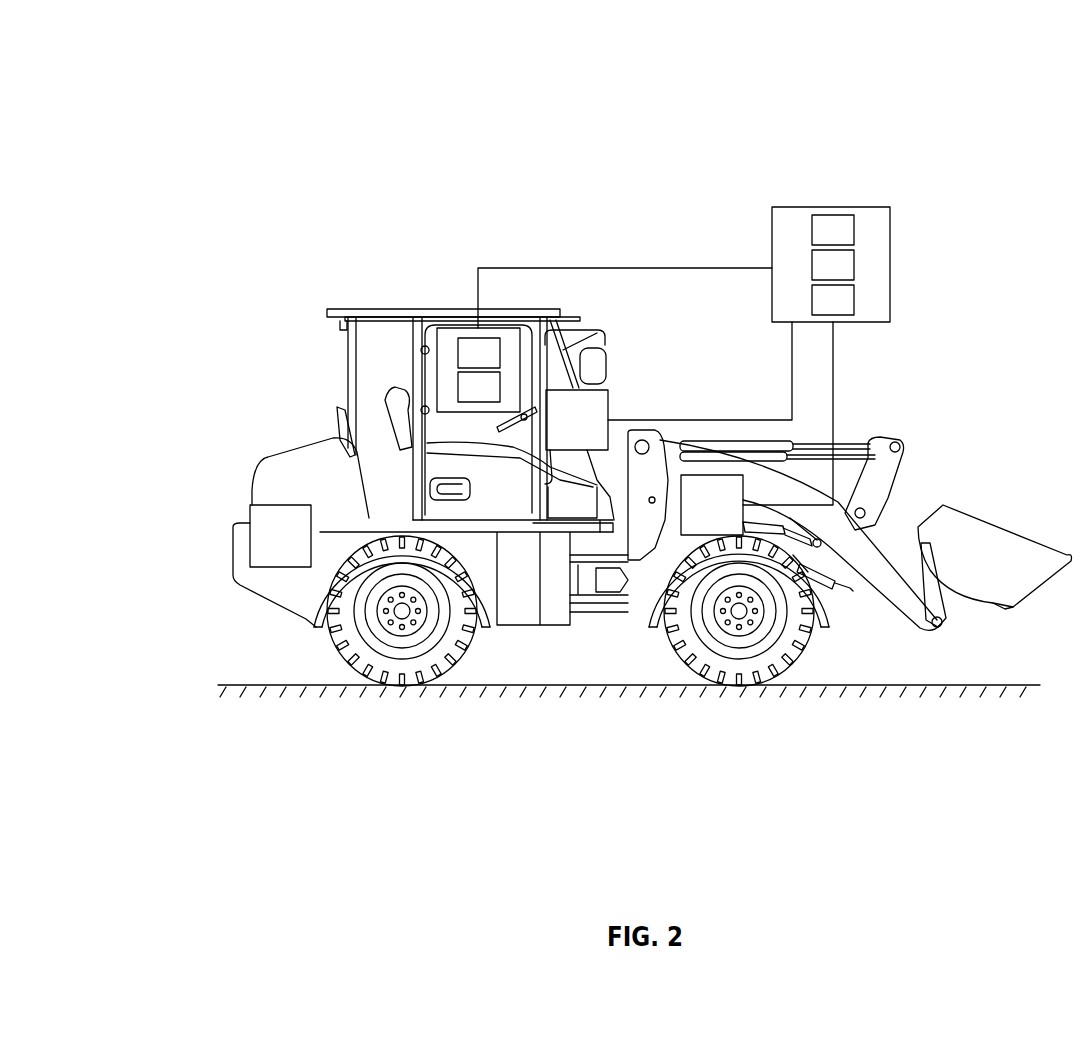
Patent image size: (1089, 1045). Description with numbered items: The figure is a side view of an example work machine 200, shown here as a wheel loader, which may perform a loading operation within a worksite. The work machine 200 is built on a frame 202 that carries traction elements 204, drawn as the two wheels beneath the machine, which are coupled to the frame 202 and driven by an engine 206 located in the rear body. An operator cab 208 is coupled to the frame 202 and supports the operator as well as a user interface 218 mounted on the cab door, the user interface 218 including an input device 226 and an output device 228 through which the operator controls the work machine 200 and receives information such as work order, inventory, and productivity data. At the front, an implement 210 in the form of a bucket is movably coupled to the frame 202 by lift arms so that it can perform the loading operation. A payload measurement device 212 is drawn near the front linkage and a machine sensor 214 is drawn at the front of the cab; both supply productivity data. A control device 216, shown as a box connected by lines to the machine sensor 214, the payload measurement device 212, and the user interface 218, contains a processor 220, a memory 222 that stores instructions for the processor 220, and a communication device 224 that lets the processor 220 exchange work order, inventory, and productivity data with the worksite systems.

The work machine 200 is at (122, 68).
The frame 202 is at (517, 627).
The traction elements 204 is at (335, 634).
The engine 206 is at (299, 548).
The operator cab 208 is at (348, 373).
The implement 210 is at (998, 537).
The payload measurement device 212 is at (731, 517).
The machine sensor 214 is at (596, 432).
The control device 216 is at (852, 249).
The user interface 218 is at (604, 340).
The processor 220 is at (850, 241).
The memory 222 is at (850, 276).
The communication device 224 is at (850, 311).
The input device 226 is at (496, 364).
The output device 228 is at (496, 398).